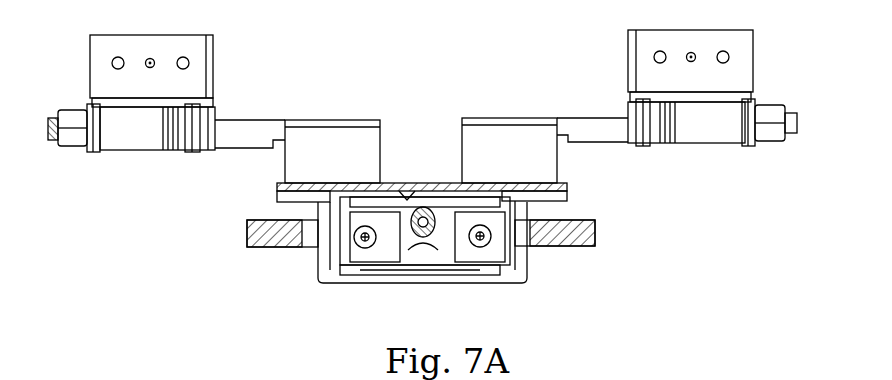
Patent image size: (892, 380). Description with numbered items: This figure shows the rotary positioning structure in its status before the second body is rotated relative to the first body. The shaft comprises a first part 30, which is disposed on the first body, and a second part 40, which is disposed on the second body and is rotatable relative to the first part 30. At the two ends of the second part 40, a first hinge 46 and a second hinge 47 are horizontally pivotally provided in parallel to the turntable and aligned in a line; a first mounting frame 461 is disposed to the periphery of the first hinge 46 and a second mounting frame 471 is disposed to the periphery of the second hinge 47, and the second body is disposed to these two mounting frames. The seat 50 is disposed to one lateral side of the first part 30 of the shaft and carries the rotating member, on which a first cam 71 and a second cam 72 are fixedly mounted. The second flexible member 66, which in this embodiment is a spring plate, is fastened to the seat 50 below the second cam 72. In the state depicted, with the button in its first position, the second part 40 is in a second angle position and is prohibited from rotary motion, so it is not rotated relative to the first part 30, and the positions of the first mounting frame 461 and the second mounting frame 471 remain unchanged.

The first part 30 is at (600, 233).
The second part 40 is at (512, 135).
The first hinge 46 is at (707, 135).
The first mounting frame 461 is at (745, 57).
The second hinge 47 is at (131, 137).
The second mounting frame 471 is at (200, 63).
The seat 50 is at (492, 262).
The second flexible member 66 is at (432, 250).
The first cam 71 is at (400, 265).
The second cam 72 is at (407, 196).